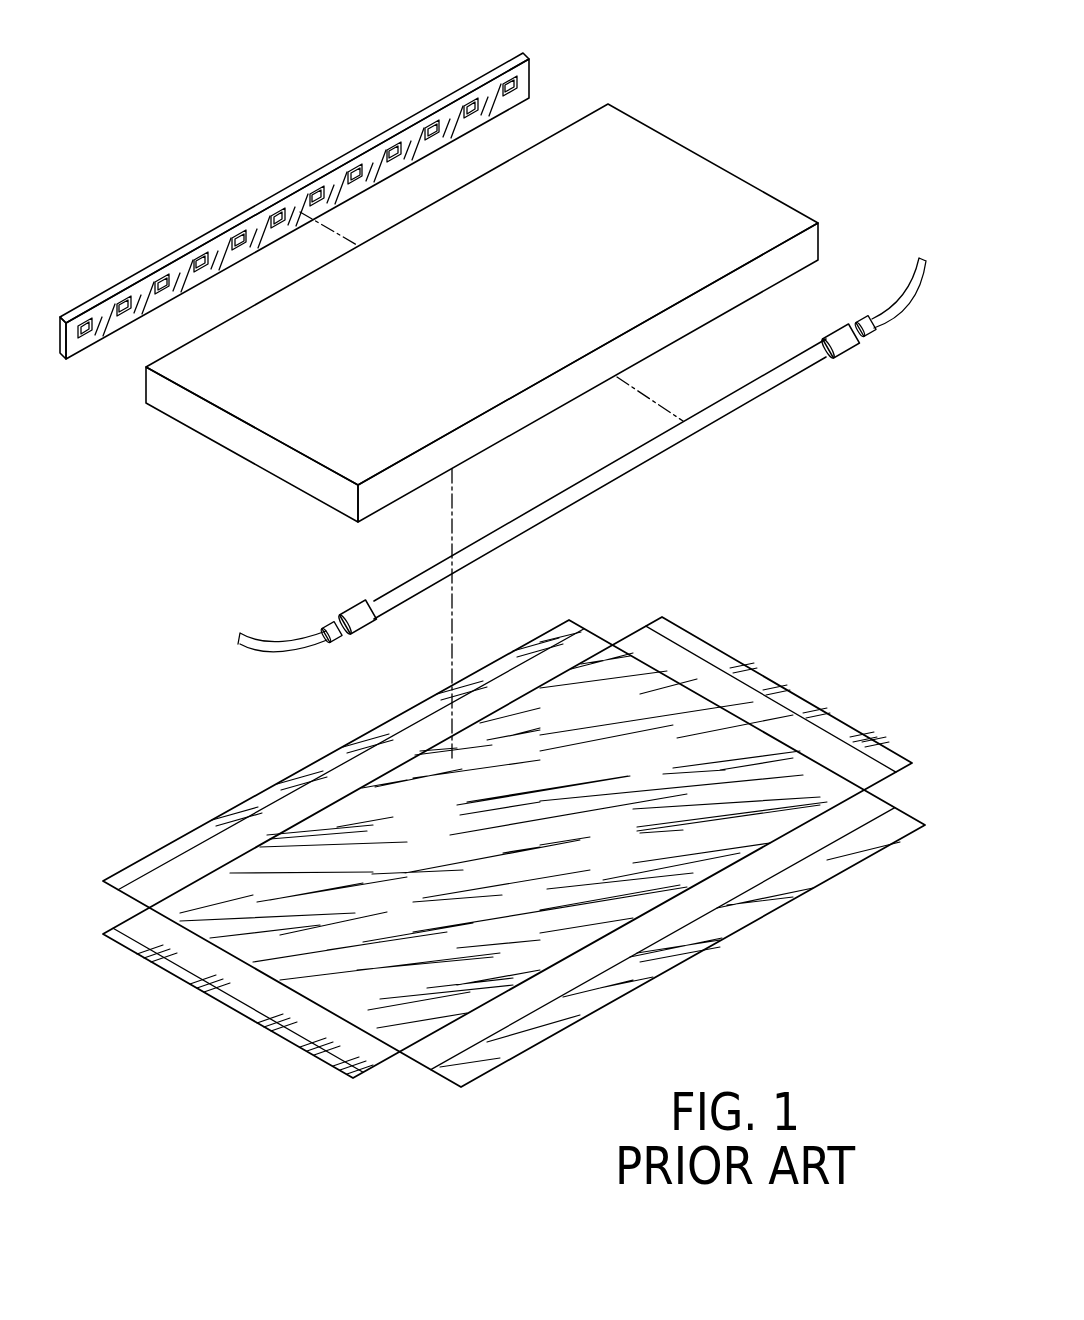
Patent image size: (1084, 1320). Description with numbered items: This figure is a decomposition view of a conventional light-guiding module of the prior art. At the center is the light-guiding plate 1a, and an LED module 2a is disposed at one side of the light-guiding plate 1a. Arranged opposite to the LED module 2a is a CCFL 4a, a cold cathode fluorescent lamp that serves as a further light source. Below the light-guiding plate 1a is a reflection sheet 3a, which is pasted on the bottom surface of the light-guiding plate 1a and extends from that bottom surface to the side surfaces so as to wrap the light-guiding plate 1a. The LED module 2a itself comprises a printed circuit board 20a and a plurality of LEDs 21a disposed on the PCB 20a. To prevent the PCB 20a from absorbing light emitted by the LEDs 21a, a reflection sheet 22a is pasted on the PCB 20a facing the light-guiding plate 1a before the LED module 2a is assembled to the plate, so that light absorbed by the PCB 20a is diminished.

The light-guiding plate 1a is at (723, 177).
The LED module 2a is at (353, 192).
The printed circuit board 20a is at (117, 286).
The LEDs 21a is at (532, 90).
The reflection sheet 22a is at (533, 72).
The reflection sheet 3a is at (710, 720).
The CCFL 4a is at (728, 413).